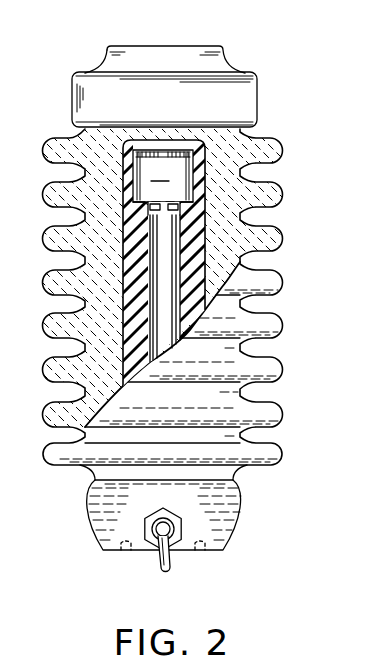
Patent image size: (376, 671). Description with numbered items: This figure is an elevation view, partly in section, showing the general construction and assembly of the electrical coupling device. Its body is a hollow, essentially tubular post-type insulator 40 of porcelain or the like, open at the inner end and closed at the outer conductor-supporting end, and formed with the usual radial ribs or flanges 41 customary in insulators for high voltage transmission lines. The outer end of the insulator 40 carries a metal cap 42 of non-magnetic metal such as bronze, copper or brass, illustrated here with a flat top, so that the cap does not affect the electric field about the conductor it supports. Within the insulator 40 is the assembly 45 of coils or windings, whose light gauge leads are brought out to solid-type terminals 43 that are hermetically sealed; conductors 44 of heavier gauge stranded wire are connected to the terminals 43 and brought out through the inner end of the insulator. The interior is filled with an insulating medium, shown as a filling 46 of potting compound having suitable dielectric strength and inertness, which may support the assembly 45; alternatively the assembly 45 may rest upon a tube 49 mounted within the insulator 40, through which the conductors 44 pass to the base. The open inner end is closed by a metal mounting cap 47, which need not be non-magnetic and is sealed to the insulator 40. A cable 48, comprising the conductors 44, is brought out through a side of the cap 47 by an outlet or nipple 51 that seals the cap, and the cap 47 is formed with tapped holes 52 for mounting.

The post-type insulator 40 is at (289, 145).
The radial ribs or flanges 41 is at (273, 200).
The metal cap 42 is at (220, 74).
The solid-type terminals 43 is at (163, 177).
The conductors 44 is at (152, 212).
The assembly 45 is at (163, 166).
The filling of potting compound 46 is at (133, 238).
The metal mounting cap 47 is at (229, 508).
The cable 48 is at (173, 562).
The tube 49 is at (157, 312).
The outlet or nipple 51 is at (155, 533).
The tapped holes 52 is at (122, 553).